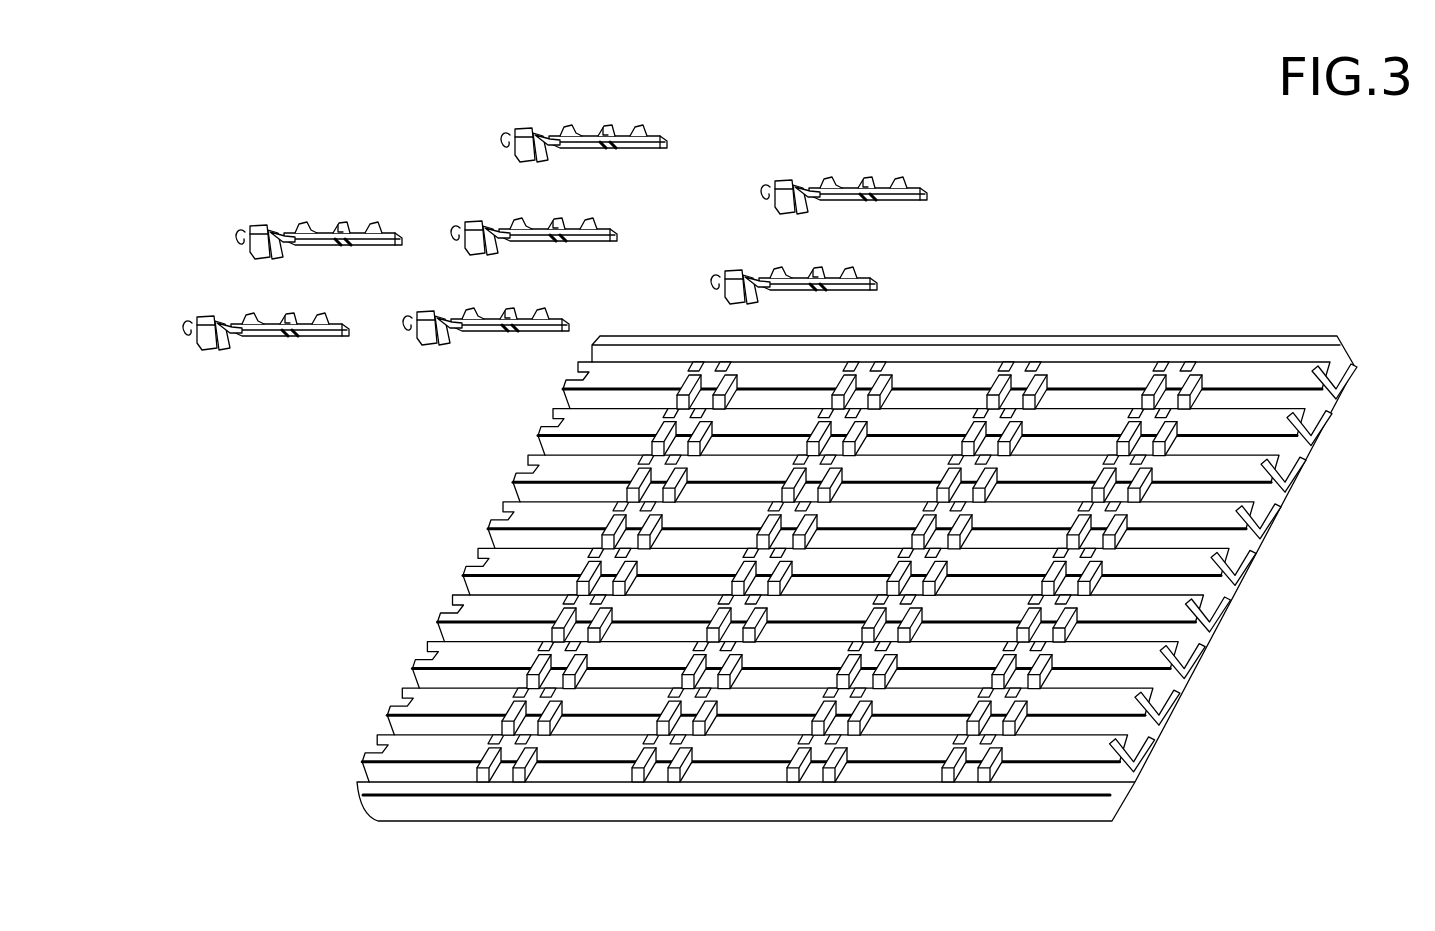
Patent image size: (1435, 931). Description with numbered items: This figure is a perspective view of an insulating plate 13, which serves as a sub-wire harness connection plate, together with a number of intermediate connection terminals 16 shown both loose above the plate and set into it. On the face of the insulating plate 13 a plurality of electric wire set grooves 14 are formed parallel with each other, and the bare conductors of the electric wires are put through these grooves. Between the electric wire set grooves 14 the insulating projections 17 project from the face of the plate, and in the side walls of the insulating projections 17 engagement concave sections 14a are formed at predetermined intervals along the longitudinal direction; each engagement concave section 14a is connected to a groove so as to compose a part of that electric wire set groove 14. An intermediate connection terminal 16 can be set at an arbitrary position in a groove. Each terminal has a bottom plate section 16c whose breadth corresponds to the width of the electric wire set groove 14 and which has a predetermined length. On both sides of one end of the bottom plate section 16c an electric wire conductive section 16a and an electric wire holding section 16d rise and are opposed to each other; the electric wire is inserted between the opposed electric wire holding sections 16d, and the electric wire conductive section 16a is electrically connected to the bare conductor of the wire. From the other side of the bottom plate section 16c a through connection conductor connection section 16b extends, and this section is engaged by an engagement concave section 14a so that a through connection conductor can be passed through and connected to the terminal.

The insulating plate 13 is at (1045, 340).
The electric wire set groove 14 is at (913, 448).
The engagement concave section 14a is at (1188, 365).
The intermediate connection terminal 16 is at (526, 228).
The electric wire conductive section 16a is at (607, 118).
The through connection conductor connection section 16b is at (510, 150).
The bottom plate section 16c is at (668, 143).
The electric wire holding section 16d is at (655, 120).
The insulating projection 17 is at (1072, 413).